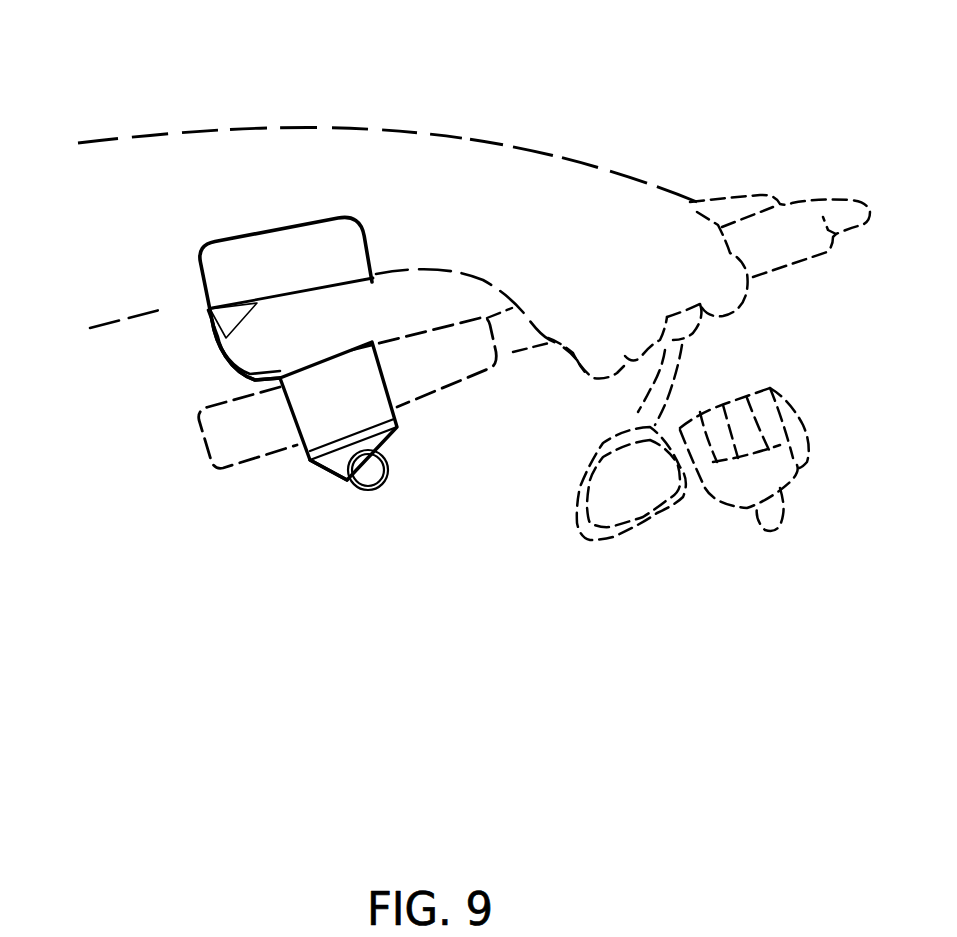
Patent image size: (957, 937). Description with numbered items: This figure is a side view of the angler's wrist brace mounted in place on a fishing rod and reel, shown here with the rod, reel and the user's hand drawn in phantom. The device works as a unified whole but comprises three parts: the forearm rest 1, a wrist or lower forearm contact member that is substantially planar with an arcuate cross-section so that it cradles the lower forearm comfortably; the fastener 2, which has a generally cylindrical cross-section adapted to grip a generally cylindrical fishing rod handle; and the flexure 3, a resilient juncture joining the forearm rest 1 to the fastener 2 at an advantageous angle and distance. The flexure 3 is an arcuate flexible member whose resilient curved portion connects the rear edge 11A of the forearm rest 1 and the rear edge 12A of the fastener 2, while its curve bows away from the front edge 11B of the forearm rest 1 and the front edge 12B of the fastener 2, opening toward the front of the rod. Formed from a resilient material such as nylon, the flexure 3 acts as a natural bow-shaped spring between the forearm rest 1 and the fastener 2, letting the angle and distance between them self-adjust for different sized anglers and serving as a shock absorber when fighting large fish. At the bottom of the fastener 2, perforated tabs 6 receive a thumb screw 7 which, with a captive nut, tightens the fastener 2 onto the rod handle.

The forearm rest 1 is at (178, 278).
The fastener 2 is at (419, 415).
The flexure 3 is at (204, 357).
The perforated tabs 6 is at (327, 472).
The thumb screw 7 is at (370, 477).
The rear edge of forearm rest 11A is at (210, 306).
The front edge of forearm rest 11B is at (372, 280).
The rear edge of fastener 12A is at (283, 382).
The front edge of fastener 12B is at (380, 343).